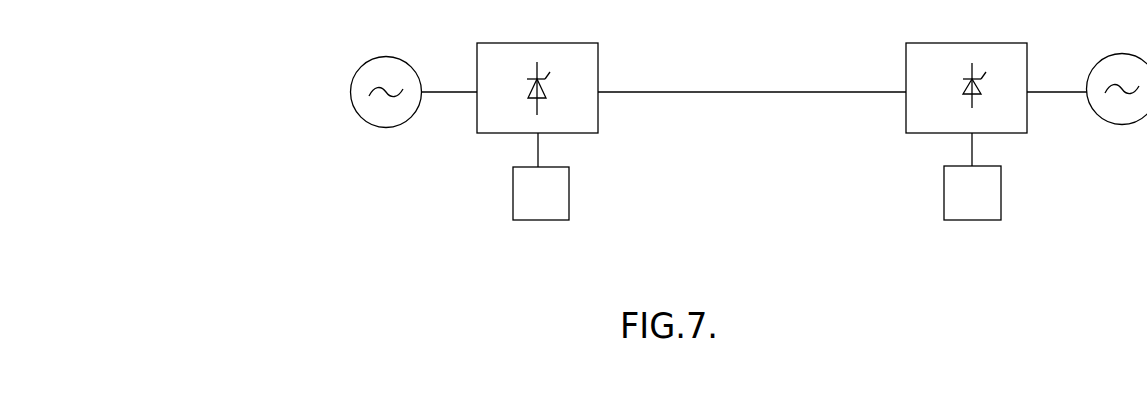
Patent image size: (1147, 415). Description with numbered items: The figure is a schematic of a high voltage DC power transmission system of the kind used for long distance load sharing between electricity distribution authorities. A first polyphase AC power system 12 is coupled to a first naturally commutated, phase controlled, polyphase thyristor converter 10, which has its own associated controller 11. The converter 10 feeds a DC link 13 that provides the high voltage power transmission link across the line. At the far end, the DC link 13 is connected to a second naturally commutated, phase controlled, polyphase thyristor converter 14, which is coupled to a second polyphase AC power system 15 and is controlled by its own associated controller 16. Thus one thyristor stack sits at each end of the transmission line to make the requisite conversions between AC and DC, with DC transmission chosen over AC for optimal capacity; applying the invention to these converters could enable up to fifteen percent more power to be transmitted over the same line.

The first thyristor converter 10 is at (578, 48).
The controller 11 is at (527, 213).
The first polyphase AC power system 12 is at (383, 121).
The DC link 13 is at (692, 94).
The second thyristor converter 14 is at (911, 127).
The second polyphase AC power system 15 is at (1118, 118).
The controller 16 is at (957, 215).